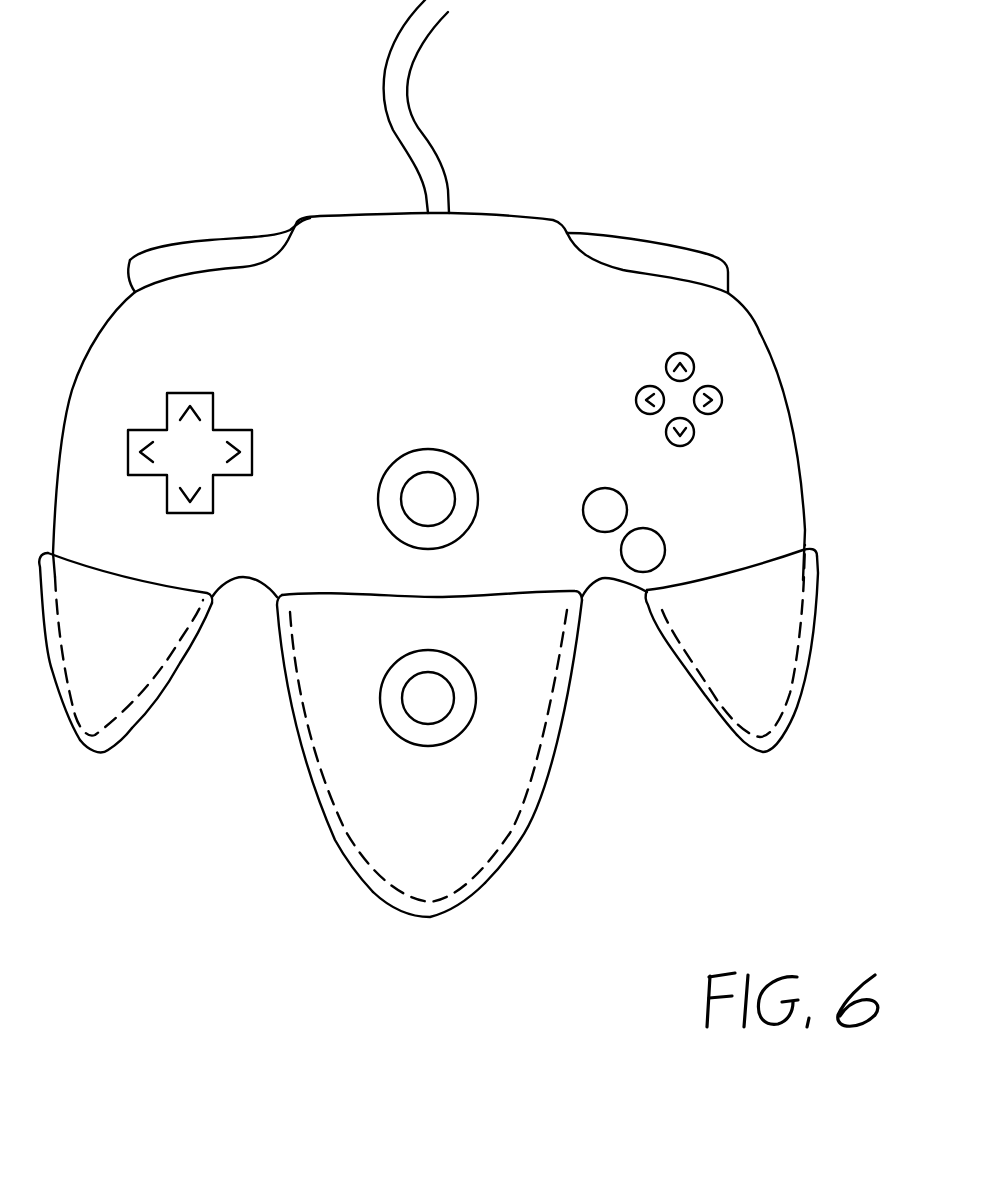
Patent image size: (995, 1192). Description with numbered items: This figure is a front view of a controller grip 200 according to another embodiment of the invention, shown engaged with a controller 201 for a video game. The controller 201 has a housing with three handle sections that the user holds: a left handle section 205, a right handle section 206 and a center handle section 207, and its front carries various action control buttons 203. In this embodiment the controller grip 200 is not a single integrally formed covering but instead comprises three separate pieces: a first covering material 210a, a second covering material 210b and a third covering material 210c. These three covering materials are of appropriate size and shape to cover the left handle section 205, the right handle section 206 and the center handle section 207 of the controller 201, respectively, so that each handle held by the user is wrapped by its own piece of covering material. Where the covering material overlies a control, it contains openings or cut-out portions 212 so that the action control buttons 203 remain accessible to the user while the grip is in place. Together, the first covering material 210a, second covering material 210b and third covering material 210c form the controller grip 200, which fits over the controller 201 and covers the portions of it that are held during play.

The controller grip 200 is at (817, 535).
The controller 201 is at (739, 303).
The action control buttons 203 is at (440, 723).
The left handle section 205 is at (113, 727).
The right handle section 206 is at (770, 737).
The center handle section 207 is at (450, 910).
The first covering material 210a is at (127, 675).
The second covering material 210b is at (763, 668).
The third covering material 210c is at (455, 840).
The cut-out portions 212 is at (478, 697).